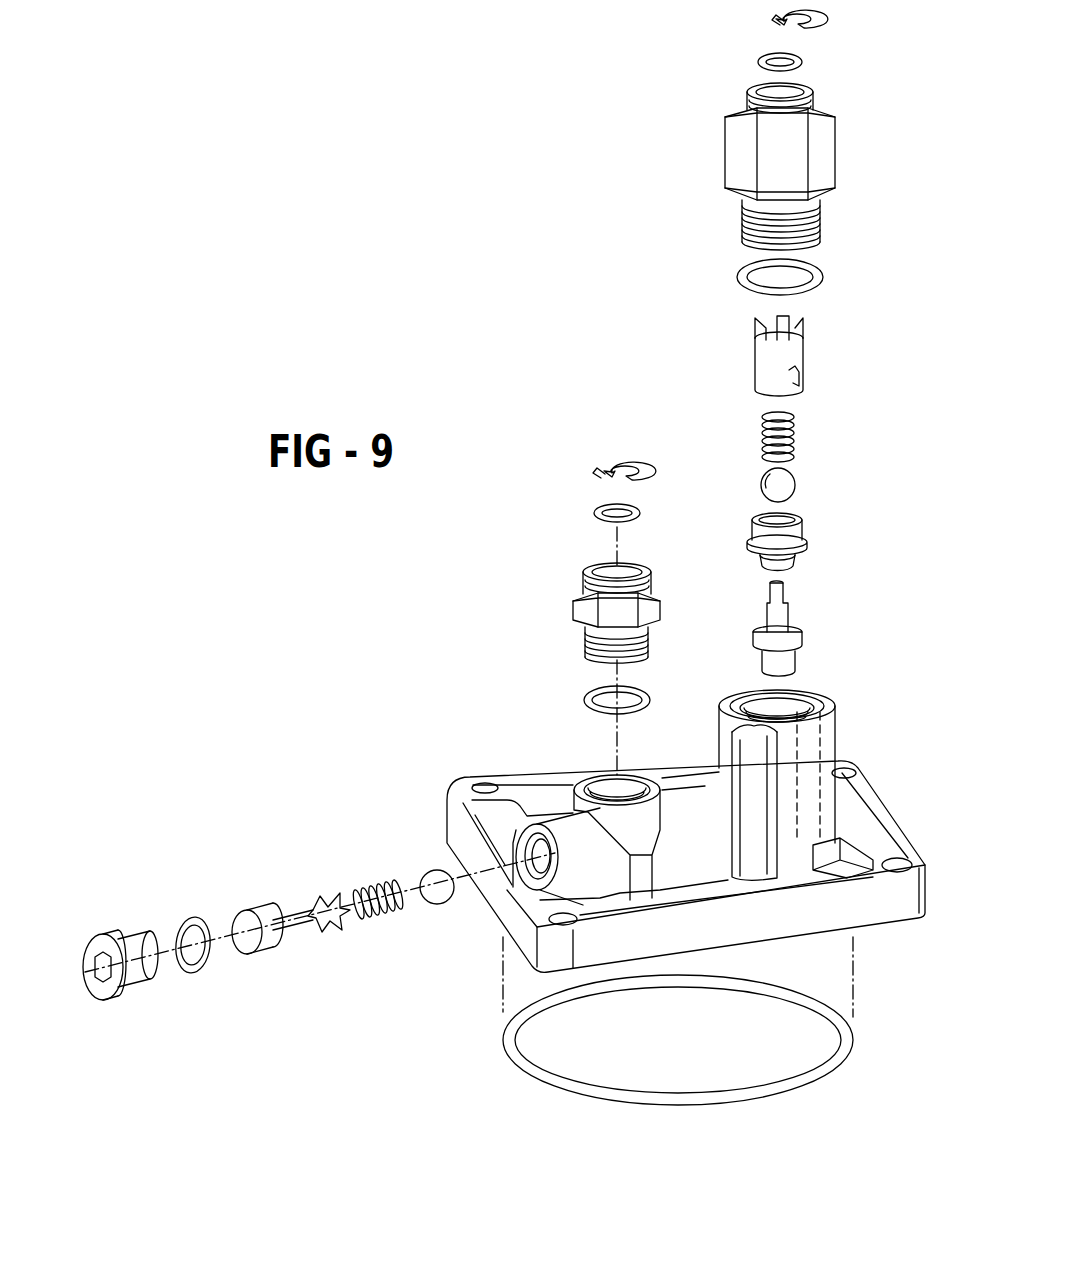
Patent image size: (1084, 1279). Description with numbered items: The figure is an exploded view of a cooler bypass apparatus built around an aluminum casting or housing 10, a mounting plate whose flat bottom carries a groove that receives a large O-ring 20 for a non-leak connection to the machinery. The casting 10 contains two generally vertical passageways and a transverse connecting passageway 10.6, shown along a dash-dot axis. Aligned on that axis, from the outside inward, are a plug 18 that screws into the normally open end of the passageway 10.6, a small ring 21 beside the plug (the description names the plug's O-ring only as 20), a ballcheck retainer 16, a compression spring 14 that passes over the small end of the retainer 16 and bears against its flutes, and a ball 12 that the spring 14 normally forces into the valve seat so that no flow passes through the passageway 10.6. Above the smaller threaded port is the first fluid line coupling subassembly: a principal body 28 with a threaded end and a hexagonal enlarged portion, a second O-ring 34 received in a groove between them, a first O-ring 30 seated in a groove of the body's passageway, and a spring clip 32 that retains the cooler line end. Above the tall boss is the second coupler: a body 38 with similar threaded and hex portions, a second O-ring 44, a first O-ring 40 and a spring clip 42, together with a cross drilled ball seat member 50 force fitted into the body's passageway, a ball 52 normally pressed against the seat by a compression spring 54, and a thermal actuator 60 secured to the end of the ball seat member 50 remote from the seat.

The casting or housing 10 is at (651, 831).
The transverse connecting passageway 10.6 is at (522, 892).
The ball 12 is at (380, 923).
The spring 14 is at (432, 872).
The ballcheck retainer 16 is at (260, 903).
The plug 18 is at (143, 990).
The O-ring 20 is at (503, 1043).
The washer 21 is at (210, 967).
The principal body 28 is at (573, 607).
The first O-ring 30 is at (640, 513).
The spring clip 32 is at (583, 477).
The second O-ring 34 is at (583, 698).
The body 38 is at (823, 160).
The first O-ring 40 is at (758, 62).
The spring clip 42 is at (817, 25).
The second O-ring 44 is at (823, 277).
The cross drilled ball seat member 50 is at (803, 348).
The ball 52 is at (763, 485).
The compression spring 54 is at (795, 443).
The thermal actuator 60 is at (802, 642).